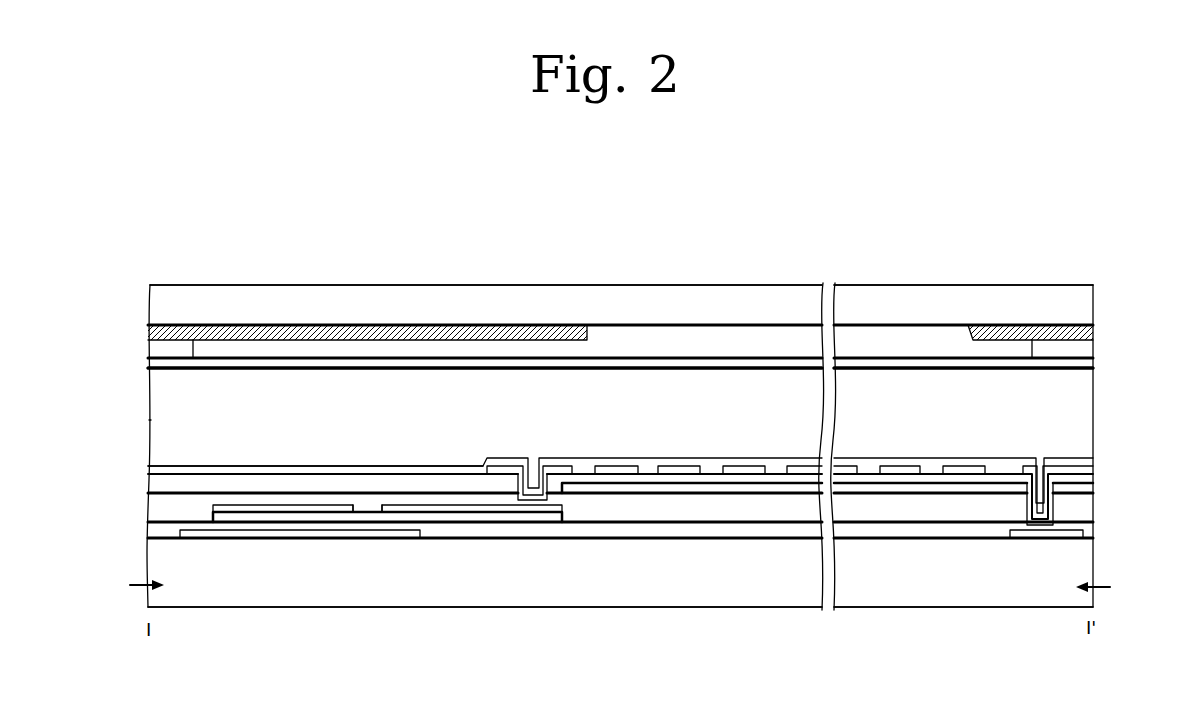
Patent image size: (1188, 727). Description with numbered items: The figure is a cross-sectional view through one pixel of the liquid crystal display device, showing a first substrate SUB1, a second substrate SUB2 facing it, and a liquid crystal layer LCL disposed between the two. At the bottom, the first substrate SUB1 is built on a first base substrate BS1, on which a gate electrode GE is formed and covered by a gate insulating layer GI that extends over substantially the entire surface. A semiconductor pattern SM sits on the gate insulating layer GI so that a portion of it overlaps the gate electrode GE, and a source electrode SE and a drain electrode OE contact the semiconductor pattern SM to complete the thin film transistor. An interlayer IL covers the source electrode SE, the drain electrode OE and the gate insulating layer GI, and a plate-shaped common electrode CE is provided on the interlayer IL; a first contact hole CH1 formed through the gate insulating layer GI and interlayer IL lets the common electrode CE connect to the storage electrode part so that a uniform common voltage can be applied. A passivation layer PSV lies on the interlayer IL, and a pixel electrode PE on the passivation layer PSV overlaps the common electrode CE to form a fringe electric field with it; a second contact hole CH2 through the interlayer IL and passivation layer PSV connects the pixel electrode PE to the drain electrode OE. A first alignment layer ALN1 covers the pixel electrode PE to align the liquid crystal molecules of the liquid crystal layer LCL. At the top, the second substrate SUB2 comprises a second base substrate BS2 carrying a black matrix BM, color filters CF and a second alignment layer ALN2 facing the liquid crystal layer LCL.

The second substrate SUB2 is at (136, 285).
The second base substrate BS2 is at (1093, 306).
The black matrix BM is at (392, 332).
The color filters CF is at (1093, 350).
The second alignment layer ALN2 is at (1093, 368).
The liquid crystal layer LCL is at (160, 419).
The first substrate SUB1 is at (131, 467).
The first base substrate BS1 is at (1093, 562).
The gate electrode GE is at (230, 538).
The gate insulating layer GI is at (1093, 526).
The semiconductor pattern SM is at (353, 507).
The source electrode SE is at (290, 513).
The output (drain) electrode OE is at (409, 513).
The interlayer IL is at (1093, 505).
The common electrode CE is at (947, 490).
The second contact hole CH2 is at (540, 466).
The first contact hole CH1 is at (1042, 473).
The passivation layer PSV is at (1093, 480).
The pixel electrode PE is at (615, 474).
The first alignment layer ALN1 is at (1093, 462).